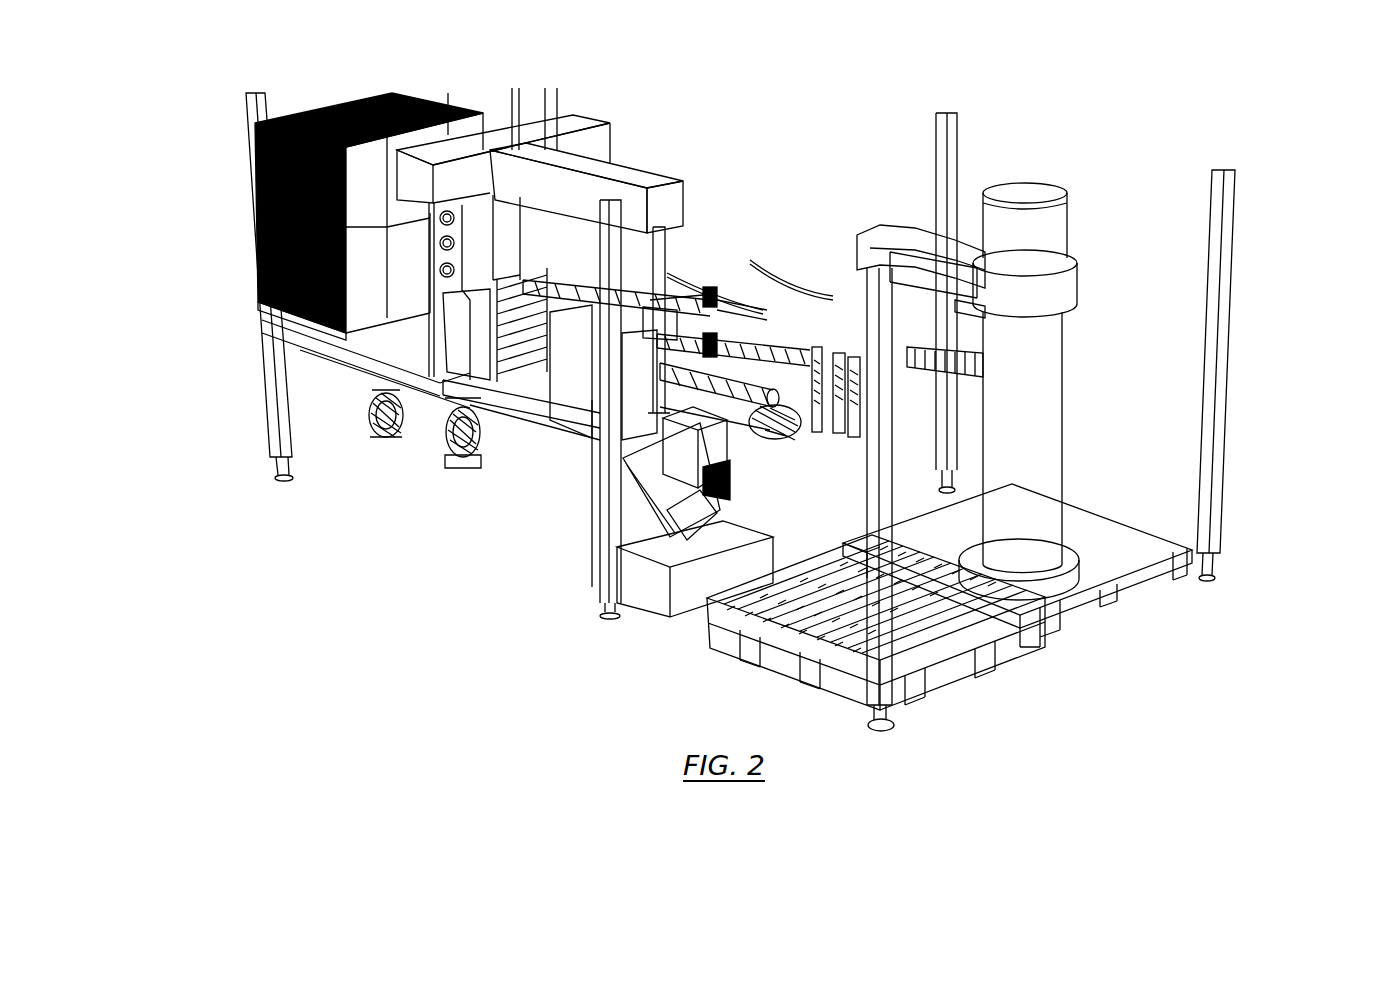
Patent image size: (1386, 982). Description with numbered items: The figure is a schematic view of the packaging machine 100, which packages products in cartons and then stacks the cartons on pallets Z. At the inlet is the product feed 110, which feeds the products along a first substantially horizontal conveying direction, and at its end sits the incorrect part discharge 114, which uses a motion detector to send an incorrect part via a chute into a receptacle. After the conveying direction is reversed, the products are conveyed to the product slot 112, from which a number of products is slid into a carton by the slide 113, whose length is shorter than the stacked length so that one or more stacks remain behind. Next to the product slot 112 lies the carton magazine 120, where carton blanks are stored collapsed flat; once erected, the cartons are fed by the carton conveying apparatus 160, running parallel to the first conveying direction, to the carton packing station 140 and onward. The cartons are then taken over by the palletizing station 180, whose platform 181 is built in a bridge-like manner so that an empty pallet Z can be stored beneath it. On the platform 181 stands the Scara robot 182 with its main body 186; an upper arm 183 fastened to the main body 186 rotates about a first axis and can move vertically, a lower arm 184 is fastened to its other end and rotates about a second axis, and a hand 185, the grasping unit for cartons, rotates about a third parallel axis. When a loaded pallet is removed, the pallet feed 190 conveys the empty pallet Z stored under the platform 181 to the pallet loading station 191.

The packaging machine 100 is at (437, 642).
The product feed 110 is at (458, 559).
The product slot 112 is at (470, 390).
The slide 113 is at (455, 333).
The incorrect part discharge 114 is at (660, 573).
The carton magazine 120 is at (293, 318).
The carton packing station 140 is at (700, 270).
The carton conveying apparatus 160 is at (455, 333).
The palletizing station 180 is at (1283, 403).
The platform 181 is at (1090, 535).
The Scara robot 182 is at (1073, 413).
The upper arm 183 is at (930, 243).
The lower arm 184 is at (977, 316).
The hand 185 is at (980, 313).
The main body 186 is at (1010, 523).
The pallet feed 190 is at (1178, 525).
The pallet loading station 191 is at (955, 702).
The pallet Z is at (950, 627).